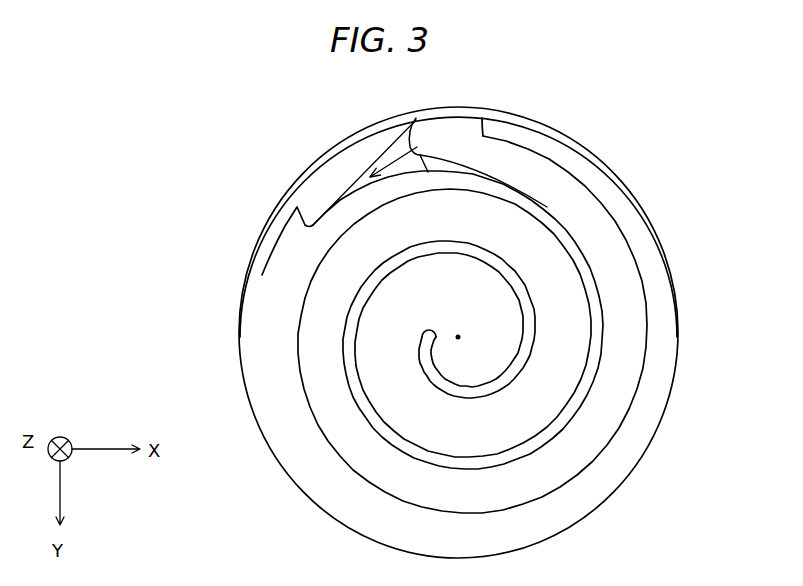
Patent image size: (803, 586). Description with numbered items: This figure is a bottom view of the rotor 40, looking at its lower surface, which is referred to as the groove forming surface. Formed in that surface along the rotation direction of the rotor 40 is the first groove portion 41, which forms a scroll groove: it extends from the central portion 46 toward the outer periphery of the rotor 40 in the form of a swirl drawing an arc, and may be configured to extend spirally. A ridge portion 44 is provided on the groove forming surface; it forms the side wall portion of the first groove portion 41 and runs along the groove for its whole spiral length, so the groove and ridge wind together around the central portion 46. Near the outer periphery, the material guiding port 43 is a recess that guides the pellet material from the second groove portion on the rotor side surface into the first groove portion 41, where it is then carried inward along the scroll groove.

The rotor 40 is at (640, 142).
The first groove portion 41 is at (563, 320).
The material guiding port 43 is at (442, 137).
The ridge portion 44 is at (352, 353).
The central portion 46 is at (470, 355).